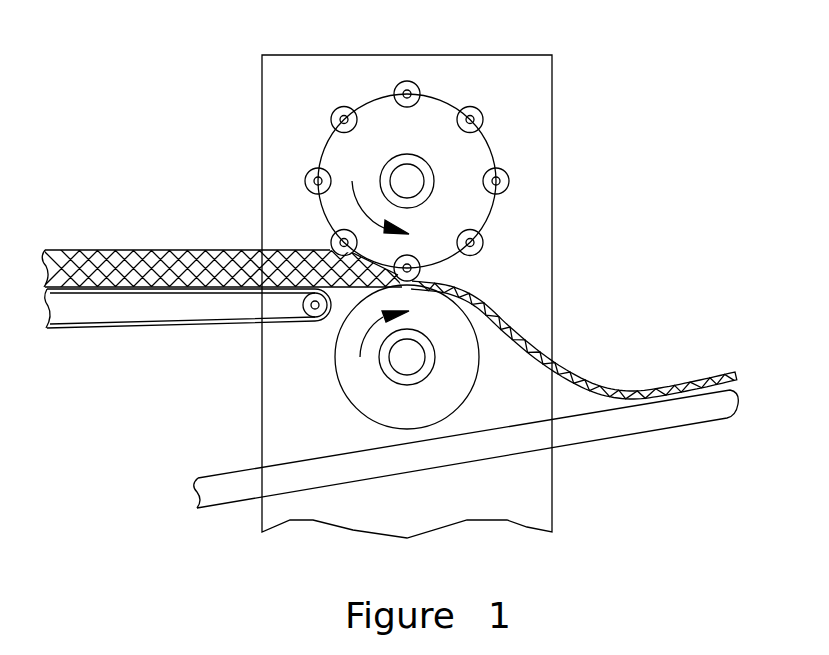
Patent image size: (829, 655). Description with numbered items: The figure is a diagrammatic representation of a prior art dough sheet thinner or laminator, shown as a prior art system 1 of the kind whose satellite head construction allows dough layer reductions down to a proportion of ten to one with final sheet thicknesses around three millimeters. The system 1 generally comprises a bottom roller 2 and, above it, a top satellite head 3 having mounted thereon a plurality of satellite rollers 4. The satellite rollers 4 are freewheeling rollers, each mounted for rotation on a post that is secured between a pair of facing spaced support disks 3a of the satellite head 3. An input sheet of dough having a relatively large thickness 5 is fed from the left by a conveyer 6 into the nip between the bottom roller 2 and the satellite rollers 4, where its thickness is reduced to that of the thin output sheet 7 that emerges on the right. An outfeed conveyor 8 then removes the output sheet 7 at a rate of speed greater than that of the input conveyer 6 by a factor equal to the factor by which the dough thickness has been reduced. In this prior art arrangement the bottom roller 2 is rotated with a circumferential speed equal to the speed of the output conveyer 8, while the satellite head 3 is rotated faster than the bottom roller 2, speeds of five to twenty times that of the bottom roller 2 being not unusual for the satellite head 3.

The prior art system 1 is at (165, 62).
The bottom roller 2 is at (338, 373).
The satellite head 3 is at (463, 153).
The support disks 3a is at (486, 224).
The satellite rollers 4 is at (485, 109).
The input sheet of dough 5 is at (90, 249).
The conveyer 6 is at (86, 331).
The output sheet 7 is at (573, 369).
The outfeed conveyor 8 is at (682, 425).